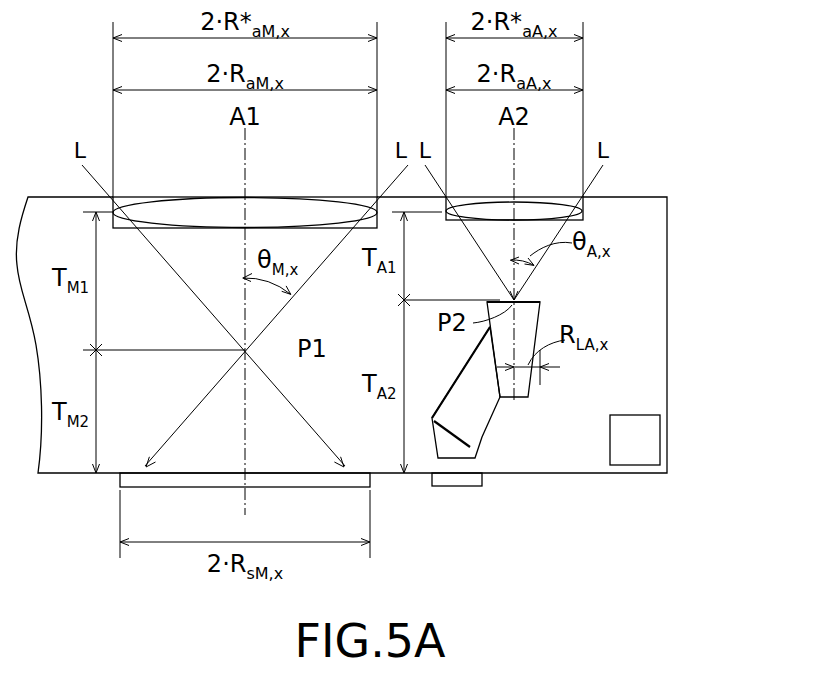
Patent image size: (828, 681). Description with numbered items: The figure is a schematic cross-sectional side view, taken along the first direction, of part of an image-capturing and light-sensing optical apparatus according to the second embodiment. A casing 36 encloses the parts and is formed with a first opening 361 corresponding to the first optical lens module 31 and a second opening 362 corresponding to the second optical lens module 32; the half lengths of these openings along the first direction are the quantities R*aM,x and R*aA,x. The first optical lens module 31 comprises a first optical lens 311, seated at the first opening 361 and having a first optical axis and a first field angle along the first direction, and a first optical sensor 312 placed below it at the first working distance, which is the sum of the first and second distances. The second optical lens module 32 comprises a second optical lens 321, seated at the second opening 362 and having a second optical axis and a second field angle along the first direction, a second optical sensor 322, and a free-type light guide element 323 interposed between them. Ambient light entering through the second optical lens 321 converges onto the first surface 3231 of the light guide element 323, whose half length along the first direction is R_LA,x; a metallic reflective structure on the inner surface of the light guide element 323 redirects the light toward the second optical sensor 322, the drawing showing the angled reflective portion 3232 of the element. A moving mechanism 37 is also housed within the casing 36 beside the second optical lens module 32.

The first optical lens module 31 is at (158, 572).
The first optical lens 311 is at (290, 210).
The first optical sensor 312 is at (120, 478).
The second optical lens module 32 is at (548, 508).
The second optical lens 321 is at (545, 210).
The second optical sensor 322 is at (470, 480).
The light guide element 323 is at (530, 318).
The first surface of the light guide element 3231 is at (510, 297).
The prism reflective portion 3232 is at (530, 398).
The casing 36 is at (655, 262).
The first opening 361 is at (120, 226).
The second opening 362 is at (585, 208).
The moving mechanism 37 is at (650, 445).